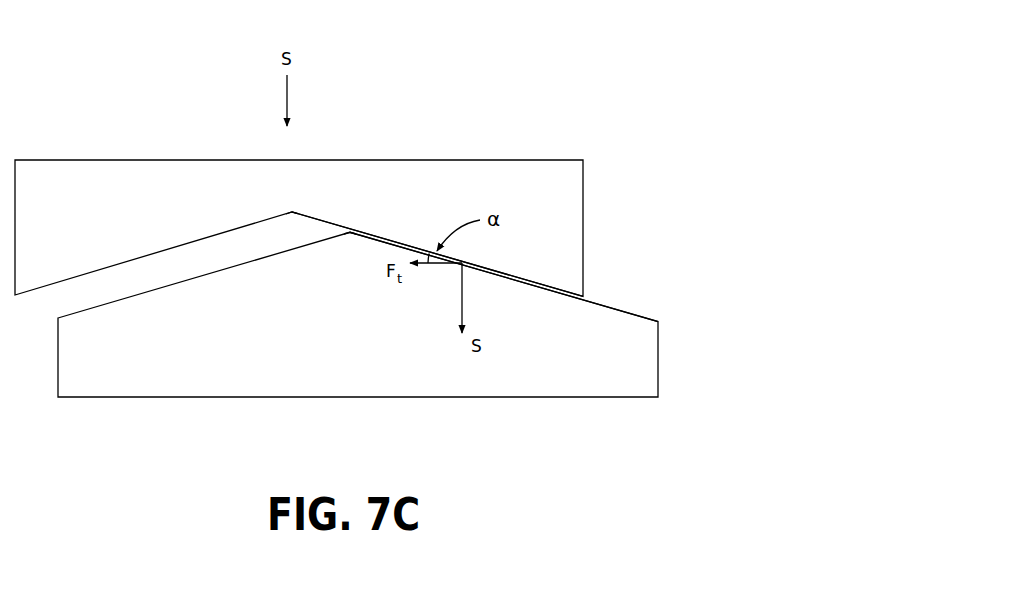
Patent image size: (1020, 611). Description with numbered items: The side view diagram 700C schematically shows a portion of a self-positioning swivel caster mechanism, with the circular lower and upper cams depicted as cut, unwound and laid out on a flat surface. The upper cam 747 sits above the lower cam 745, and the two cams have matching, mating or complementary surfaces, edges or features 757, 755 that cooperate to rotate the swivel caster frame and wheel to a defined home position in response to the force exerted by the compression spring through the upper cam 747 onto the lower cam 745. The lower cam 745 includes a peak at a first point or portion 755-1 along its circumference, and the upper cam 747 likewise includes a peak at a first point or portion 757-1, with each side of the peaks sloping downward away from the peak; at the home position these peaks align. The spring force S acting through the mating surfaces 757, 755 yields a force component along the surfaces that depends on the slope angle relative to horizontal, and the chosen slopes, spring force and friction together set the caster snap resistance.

The side view diagram 700C is at (624, 80).
The upper cam 747 is at (583, 197).
The mating surface of upper cam 757 is at (513, 274).
The peak of upper cam 757-1 is at (294, 210).
The lower cam 745 is at (658, 373).
The mating surface of lower cam 755 is at (618, 304).
The peak of lower cam 755-1 is at (348, 235).